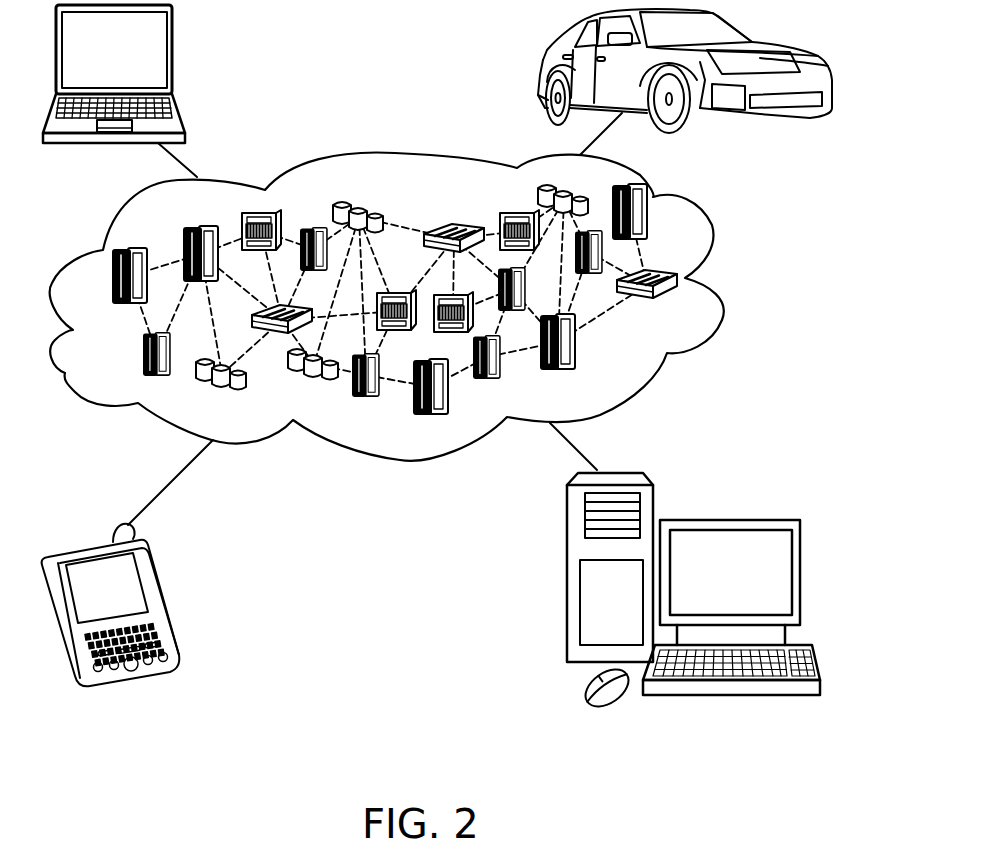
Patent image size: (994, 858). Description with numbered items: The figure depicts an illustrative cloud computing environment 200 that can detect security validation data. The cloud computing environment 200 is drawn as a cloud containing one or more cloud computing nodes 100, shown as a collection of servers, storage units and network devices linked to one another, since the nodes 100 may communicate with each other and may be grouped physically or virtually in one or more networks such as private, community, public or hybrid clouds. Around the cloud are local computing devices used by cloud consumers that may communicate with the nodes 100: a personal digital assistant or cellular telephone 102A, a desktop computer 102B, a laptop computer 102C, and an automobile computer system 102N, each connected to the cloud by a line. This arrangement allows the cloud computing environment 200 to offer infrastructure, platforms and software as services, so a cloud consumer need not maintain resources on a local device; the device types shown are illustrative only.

The cloud computing nodes 100 is at (682, 308).
The cloud computing environment 200 is at (685, 278).
The personal digital assistant or cellular telephone 102A is at (153, 568).
The desktop computer 102B is at (720, 520).
The laptop computer 102C is at (172, 35).
The automobile computer system 102N is at (545, 69).